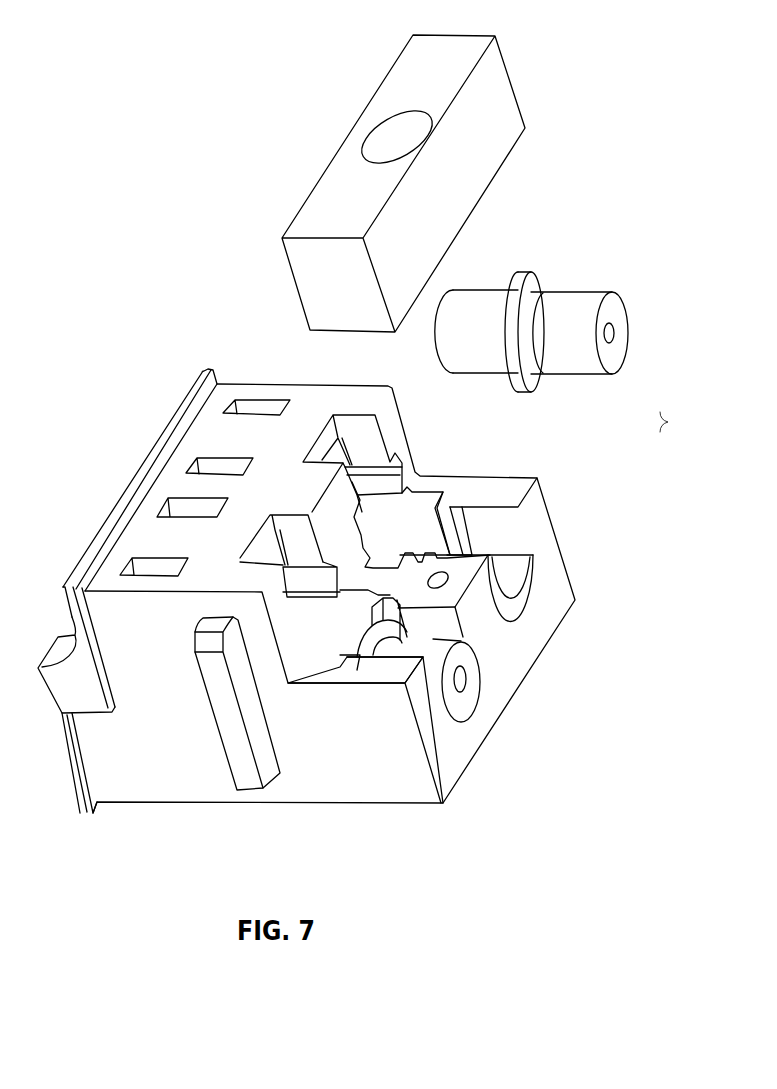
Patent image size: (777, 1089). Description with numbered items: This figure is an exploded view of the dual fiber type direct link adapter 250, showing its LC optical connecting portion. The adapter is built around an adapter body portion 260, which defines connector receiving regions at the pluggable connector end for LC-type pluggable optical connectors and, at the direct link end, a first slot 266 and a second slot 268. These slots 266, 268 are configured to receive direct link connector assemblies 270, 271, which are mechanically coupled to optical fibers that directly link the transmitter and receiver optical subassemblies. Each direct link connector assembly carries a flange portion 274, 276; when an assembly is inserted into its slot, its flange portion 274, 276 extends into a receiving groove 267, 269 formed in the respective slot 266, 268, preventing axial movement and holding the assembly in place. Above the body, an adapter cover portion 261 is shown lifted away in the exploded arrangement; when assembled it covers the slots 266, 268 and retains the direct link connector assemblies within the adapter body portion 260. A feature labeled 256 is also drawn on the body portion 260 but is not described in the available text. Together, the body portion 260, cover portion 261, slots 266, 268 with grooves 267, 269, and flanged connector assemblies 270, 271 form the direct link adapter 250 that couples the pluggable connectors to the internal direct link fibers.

The dual fiber type direct link adapter 250 is at (683, 423).
The rib 256 is at (227, 737).
The adapter body portion 260 is at (320, 803).
The adapter cover portion 261 is at (482, 152).
The first slot 266 is at (448, 628).
The receiving groove 267 is at (350, 657).
The second slot 268 is at (528, 572).
The receiving groove 269 is at (467, 503).
The direct link connector assembly 270 is at (470, 700).
The direct link connector assembly 271 is at (598, 375).
The flange portion 274 is at (377, 642).
The flange portion 276 is at (547, 278).